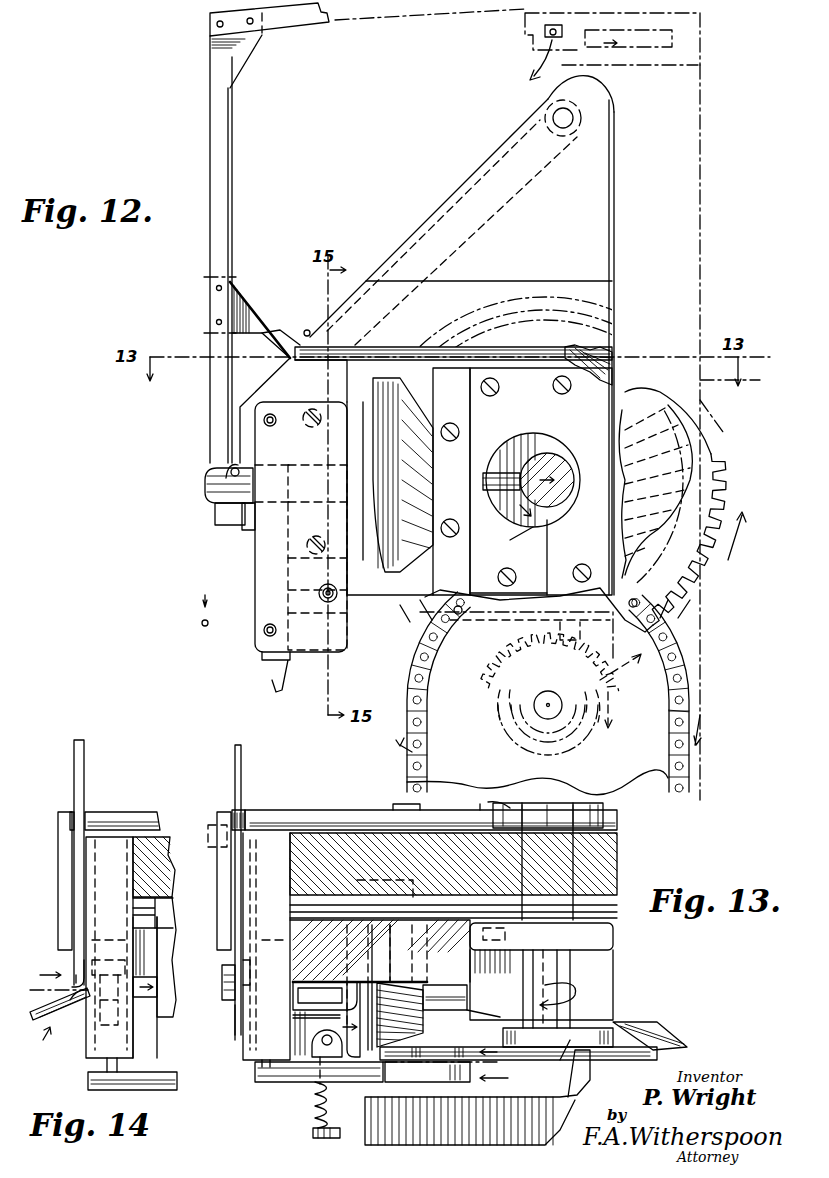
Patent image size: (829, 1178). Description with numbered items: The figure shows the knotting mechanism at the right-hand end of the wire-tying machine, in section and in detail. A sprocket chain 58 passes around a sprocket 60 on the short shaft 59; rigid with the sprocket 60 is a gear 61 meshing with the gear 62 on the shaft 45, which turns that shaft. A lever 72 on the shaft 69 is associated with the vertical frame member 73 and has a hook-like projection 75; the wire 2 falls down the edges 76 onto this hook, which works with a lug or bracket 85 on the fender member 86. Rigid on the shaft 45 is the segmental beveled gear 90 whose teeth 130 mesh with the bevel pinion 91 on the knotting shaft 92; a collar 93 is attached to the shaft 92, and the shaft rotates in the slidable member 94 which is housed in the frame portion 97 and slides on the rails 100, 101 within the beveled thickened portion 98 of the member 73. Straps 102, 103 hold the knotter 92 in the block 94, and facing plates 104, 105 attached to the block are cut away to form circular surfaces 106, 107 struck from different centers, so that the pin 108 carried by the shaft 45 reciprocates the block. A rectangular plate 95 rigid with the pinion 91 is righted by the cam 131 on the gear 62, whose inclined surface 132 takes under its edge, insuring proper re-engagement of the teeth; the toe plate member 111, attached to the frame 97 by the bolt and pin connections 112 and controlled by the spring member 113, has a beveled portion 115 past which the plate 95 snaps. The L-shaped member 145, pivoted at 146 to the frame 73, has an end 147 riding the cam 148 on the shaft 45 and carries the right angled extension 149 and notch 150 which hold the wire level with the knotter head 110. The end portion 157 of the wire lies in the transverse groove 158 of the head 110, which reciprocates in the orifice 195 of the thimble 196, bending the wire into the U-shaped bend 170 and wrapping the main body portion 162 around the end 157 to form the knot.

In FIG. 12, the wire 2 is at (306, 330).
In FIG. 13, the wire 2 is at (242, 778).
In FIG. 14, the wire 2 is at (85, 793).
In FIG. 12, the shaft 45 is at (560, 462).
In FIG. 13, the shaft 45 is at (575, 970).
In FIG. 12, the sprocket chain 58 is at (690, 788).
In FIG. 12, the short shaft 59 is at (535, 709).
In FIG. 12, the sprocket 60 is at (646, 755).
In FIG. 12, the gear 61 is at (500, 684).
In FIG. 12, the gear 62 is at (722, 560).
In FIG. 13, the gear 62 is at (440, 1138).
In FIG. 12, the shaft 69 is at (570, 125).
In FIG. 12, the lever 72 is at (452, 192).
In FIG. 12, the vertical frame member 73 is at (600, 163).
In FIG. 13, the vertical frame member 73 is at (600, 855).
In FIG. 14, the vertical frame member 73 is at (165, 868).
In FIG. 12, the hook-like projection 75 is at (283, 330).
In FIG. 12, the edges or inclines 76 is at (517, 122).
In FIG. 12, the lug or bracket 85 is at (265, 300).
In FIG. 12, the fender member 86 is at (228, 166).
In FIG. 13, the fender member 86 is at (208, 828).
In FIG. 12, the segmental beveled gear 90 is at (680, 430).
In FIG. 13, the segmental beveled gear 90 is at (615, 1058).
In FIG. 12, the bevel pinion 91 is at (395, 520).
In FIG. 13, the bevel pinion 91 is at (378, 983).
In FIG. 14, the knotting shaft 92 is at (140, 997).
In FIG. 12, the collar 93 is at (425, 415).
In FIG. 12, the slidable member 94 is at (612, 375).
In FIG. 14, the slidable member 94 is at (170, 912).
In FIG. 12, the rectangular block or plate 95 is at (347, 410).
In FIG. 13, the rectangular block or plate 95 is at (348, 948).
In FIG. 12, the frame portion 97 is at (255, 563).
In FIG. 13, the frame portion 97 is at (262, 866).
In FIG. 14, the frame portion 97 is at (107, 865).
In FIG. 12, the beveled thickened portion 98 is at (590, 292).
In FIG. 14, the rail 100 is at (165, 925).
In FIG. 13, the rail 101 is at (610, 908).
In FIG. 13, the strap 102 is at (298, 985).
In FIG. 14, the strap 102 is at (160, 985).
In FIG. 12, the strap 103 is at (448, 420).
In FIG. 13, the strap 103 is at (452, 977).
In FIG. 12, the facing plate 104 is at (560, 406).
In FIG. 12, the facing plate 105 is at (482, 542).
In FIG. 12, the circular surface 106 is at (560, 515).
In FIG. 12, the circular surface 107 is at (535, 540).
In FIG. 12, the pin 108 is at (520, 447).
In FIG. 13, the pin 108 is at (514, 972).
In FIG. 12, the knotter head 110 is at (206, 498).
In FIG. 13, the knotter head 110 is at (228, 1000).
In FIG. 12, the toe plate member 111 is at (265, 585).
In FIG. 13, the toe plate member 111 is at (300, 1082).
In FIG. 14, the toe plate member 111 is at (142, 1084).
In FIG. 12, the bolt and pin connections 112 is at (268, 426).
In FIG. 13, the bolt and pin connections 112 is at (262, 1068).
In FIG. 14, the bolt and pin connections 112 is at (105, 1066).
In FIG. 12, the spring controlled member 113 is at (322, 588).
In FIG. 13, the spring controlled member 113 is at (328, 1136).
In FIG. 13, the inclined or beveled portion 115 is at (400, 1060).
In FIG. 12, the teeth 130 is at (700, 400).
In FIG. 13, the teeth 130 is at (648, 1028).
In FIG. 13, the cam 131 is at (485, 1105).
In FIG. 13, the inclined surface 132 is at (420, 1060).
In FIG. 12, the L-shaped member 145 is at (246, 526).
In FIG. 13, the L-shaped member 145 is at (333, 818).
In FIG. 14, the L-shaped member 145 is at (112, 816).
In FIG. 13, the pivot 146 is at (393, 806).
In FIG. 13, the end 147 is at (508, 802).
In FIG. 13, the cam 148 is at (605, 814).
In FIG. 12, the right angled extension 149 is at (215, 514).
In FIG. 13, the right angled extension 149 is at (220, 884).
In FIG. 14, the right angled extension 149 is at (60, 873).
In FIG. 13, the notch 150 is at (245, 812).
In FIG. 14, the notch 150 is at (71, 812).
In FIG. 13, the end portion 157 is at (235, 1022).
In FIG. 14, the end portion 157 is at (34, 1002).
In FIG. 12, the transverse groove 158 is at (230, 468).
In FIG. 13, the transverse groove 158 is at (243, 963).
In FIG. 14, the main body portion 162 is at (74, 952).
In FIG. 14, the U-shaped bend 170 is at (126, 965).
In FIG. 12, the orifice 195 is at (285, 470).
In FIG. 14, the orifice 195 is at (90, 1005).
In FIG. 12, the thimble or tube 196 is at (258, 485).
In FIG. 13, the thimble or tube 196 is at (273, 942).
In FIG. 14, the thimble or tube 196 is at (109, 940).